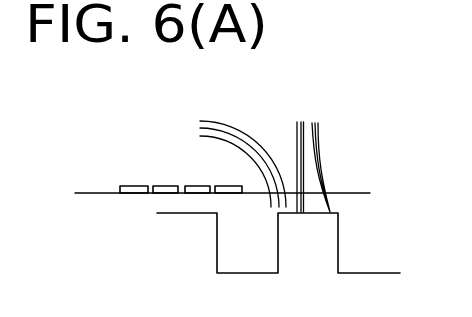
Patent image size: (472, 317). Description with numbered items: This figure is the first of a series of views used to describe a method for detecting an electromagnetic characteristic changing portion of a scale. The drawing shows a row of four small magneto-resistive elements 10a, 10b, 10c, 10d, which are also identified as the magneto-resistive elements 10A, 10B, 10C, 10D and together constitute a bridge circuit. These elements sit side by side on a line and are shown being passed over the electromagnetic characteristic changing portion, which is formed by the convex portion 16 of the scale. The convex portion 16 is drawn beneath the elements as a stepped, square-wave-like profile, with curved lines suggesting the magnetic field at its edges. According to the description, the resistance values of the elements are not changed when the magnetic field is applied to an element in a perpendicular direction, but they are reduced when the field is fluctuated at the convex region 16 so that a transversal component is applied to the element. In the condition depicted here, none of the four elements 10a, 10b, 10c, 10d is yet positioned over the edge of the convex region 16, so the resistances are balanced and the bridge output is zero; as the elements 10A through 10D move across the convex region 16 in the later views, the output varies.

The magneto-resistive element 10A is at (114, 141).
The magneto-resistive element 10a is at (132, 185).
The magneto-resistive element 10B is at (133, 237).
The magneto-resistive element 10b is at (160, 195).
The magneto-resistive element 10C is at (182, 141).
The magneto-resistive element 10c is at (197, 185).
The magneto-resistive element 10D is at (204, 237).
The magneto-resistive element 10d is at (226, 194).
The convex portion 16 is at (330, 257).